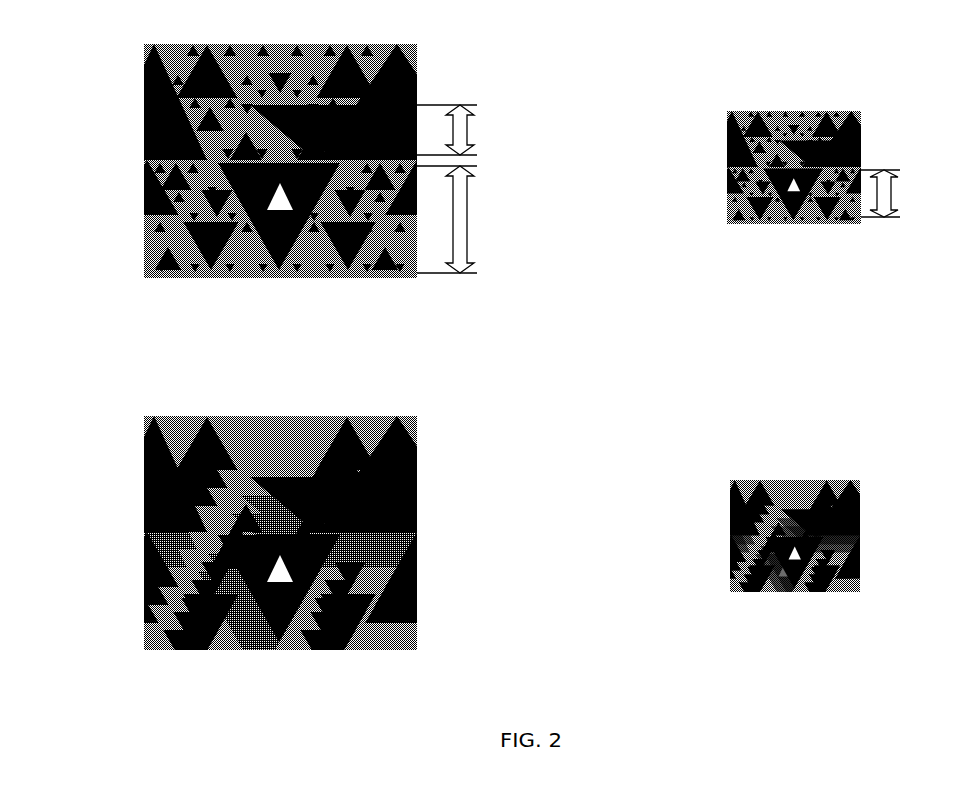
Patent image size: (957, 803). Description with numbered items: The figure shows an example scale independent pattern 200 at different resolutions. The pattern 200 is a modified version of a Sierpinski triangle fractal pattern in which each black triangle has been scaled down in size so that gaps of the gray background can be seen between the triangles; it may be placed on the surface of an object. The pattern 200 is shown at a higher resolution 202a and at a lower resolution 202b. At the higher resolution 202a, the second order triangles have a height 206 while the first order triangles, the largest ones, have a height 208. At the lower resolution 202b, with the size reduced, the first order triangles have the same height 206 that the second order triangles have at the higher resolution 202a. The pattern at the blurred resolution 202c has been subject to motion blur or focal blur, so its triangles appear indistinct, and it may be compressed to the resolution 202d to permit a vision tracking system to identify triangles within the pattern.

The scale independent pattern 200 is at (76, 60).
The higher resolution 202a is at (263, 44).
The lower resolution 202b is at (777, 111).
The blurred resolution 202c is at (263, 417).
The compressed resolution 202d is at (797, 479).
The height 206 is at (470, 120).
The height 208 is at (470, 215).